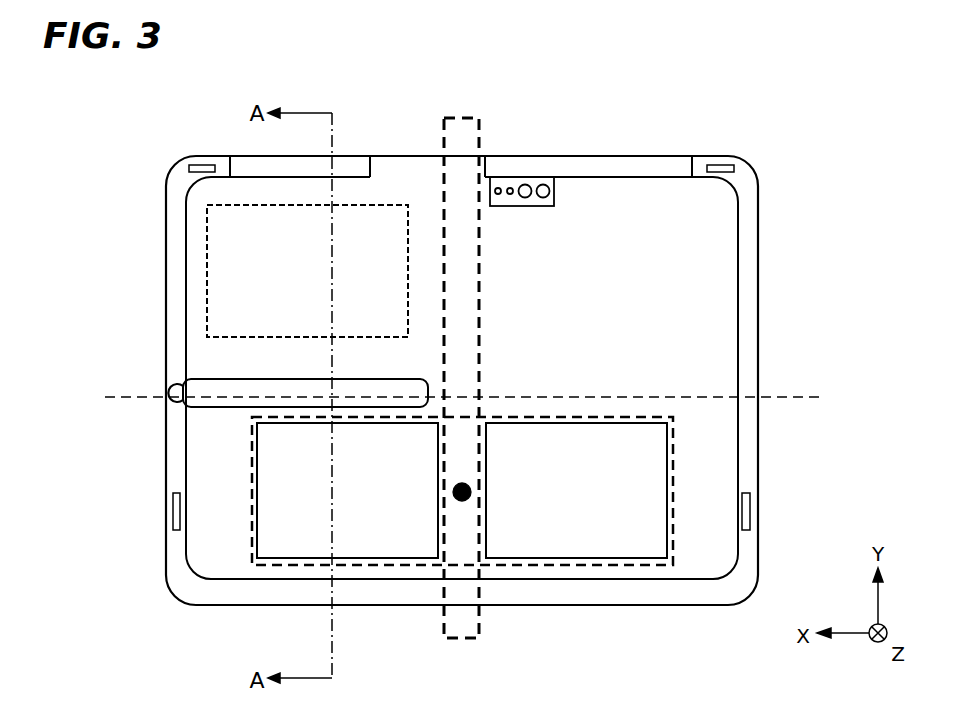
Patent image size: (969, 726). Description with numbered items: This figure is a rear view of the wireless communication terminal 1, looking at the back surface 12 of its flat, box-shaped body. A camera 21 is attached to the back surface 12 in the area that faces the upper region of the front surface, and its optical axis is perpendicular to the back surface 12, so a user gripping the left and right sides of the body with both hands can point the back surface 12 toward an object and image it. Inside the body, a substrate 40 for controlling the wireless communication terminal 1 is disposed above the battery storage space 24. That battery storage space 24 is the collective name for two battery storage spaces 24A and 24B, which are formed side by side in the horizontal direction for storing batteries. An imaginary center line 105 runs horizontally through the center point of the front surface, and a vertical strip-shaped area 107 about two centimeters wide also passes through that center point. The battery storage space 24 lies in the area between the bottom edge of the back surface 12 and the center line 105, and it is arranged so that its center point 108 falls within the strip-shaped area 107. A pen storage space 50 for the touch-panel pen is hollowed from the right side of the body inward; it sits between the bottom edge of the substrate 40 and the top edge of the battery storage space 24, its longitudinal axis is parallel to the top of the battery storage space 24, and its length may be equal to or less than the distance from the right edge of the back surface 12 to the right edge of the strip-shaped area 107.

The wireless communication terminal 1 is at (453, 86).
The back surface 12 is at (665, 203).
The camera 21 is at (537, 178).
The substrate 40 is at (207, 218).
The pen storage space 50 is at (205, 377).
The center line 105 is at (152, 396).
The strip-shaped area 107 is at (440, 630).
The center point of the battery storage space 108 is at (455, 488).
The battery storage space 24 is at (300, 567).
The battery storage space 24A is at (585, 528).
The battery storage space 24B is at (282, 535).